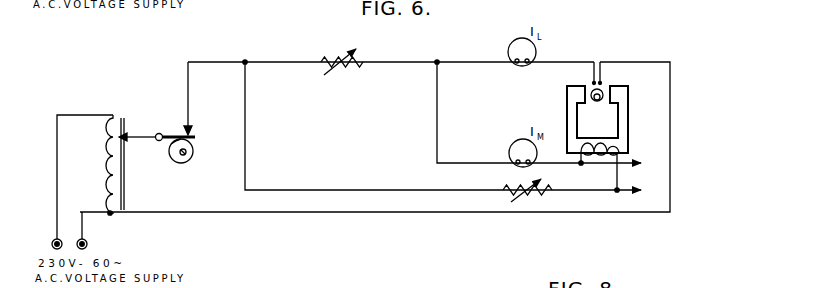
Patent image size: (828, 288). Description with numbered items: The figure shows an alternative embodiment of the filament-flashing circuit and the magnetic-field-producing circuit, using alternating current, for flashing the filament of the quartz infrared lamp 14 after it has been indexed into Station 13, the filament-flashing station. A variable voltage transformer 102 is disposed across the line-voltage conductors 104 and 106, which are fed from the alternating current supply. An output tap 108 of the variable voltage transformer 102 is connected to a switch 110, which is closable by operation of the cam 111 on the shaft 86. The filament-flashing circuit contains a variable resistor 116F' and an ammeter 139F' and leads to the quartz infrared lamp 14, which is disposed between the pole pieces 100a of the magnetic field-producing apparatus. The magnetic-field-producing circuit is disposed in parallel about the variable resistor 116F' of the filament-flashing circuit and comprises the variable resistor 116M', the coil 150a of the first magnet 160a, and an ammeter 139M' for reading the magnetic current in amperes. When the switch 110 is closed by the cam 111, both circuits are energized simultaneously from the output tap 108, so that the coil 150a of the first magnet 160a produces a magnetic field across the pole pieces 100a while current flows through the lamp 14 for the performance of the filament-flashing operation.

The variable voltage transformer 102 is at (126, 117).
The line-voltage conductor 104 is at (57, 169).
The line-voltage conductor 106 is at (82, 232).
The output tap 108 is at (139, 139).
The switch 110 is at (181, 132).
The cam 111 is at (195, 144).
The shaft 86 is at (180, 163).
The variable resistor 116F' is at (342, 74).
The ammeter 139F' is at (497, 48).
The ammeter 139M' is at (503, 147).
The variable resistor 116M' is at (505, 188).
The pole pieces 100a is at (616, 96).
The first magnet 160a is at (630, 99).
The quartz infrared lamp 14 is at (598, 103).
The coil 150a is at (610, 133).
The Station 13 is at (600, 178).